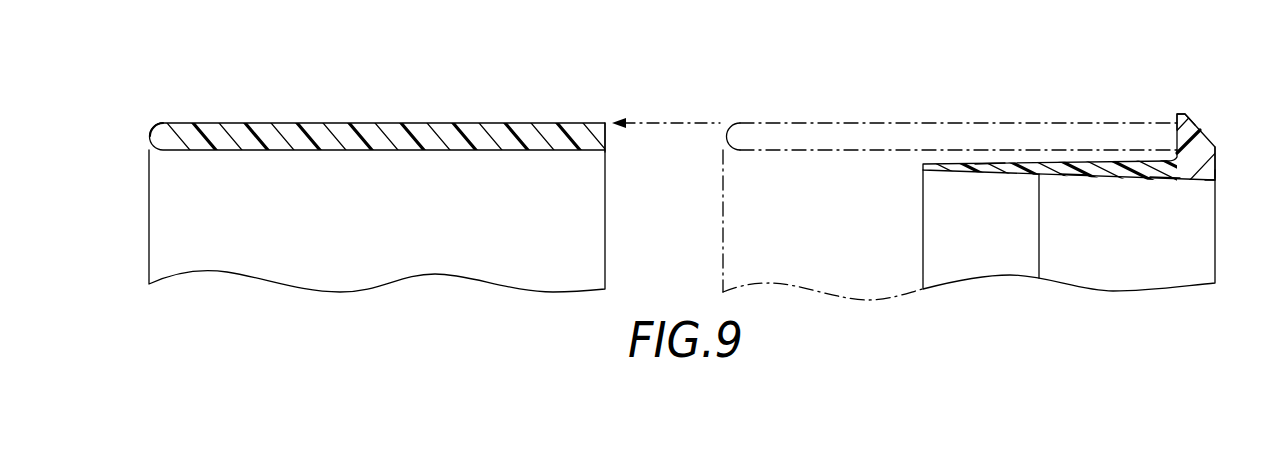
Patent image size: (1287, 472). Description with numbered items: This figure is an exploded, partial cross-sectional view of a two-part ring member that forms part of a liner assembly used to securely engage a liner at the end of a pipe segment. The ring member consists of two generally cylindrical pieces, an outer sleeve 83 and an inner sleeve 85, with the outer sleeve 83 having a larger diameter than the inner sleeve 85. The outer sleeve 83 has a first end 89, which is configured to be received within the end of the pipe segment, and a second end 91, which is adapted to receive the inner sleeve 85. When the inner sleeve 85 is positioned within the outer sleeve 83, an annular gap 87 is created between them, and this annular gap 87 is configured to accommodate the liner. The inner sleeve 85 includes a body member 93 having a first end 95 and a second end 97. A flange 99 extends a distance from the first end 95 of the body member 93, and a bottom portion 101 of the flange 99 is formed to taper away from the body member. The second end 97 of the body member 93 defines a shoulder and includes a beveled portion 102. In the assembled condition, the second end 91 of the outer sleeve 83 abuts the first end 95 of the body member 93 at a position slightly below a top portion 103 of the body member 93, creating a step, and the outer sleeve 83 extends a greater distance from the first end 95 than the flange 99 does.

The outer sleeve 83 is at (1195, 183).
The inner sleeve 85 is at (526, 123).
The annular gap 87 is at (1017, 158).
The first end 89 is at (151, 131).
The second end 91 is at (606, 130).
The body member 93 is at (1217, 153).
The first end 95 is at (1165, 179).
The second end 97 is at (1217, 180).
The flange 99 is at (991, 168).
The bottom portion 101 is at (1077, 178).
The beveled portion 102 is at (1202, 136).
The top portion 103 is at (1179, 113).